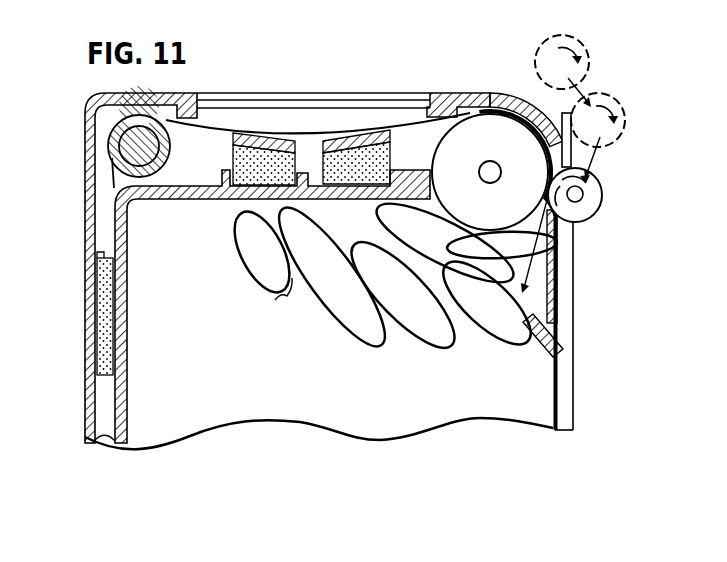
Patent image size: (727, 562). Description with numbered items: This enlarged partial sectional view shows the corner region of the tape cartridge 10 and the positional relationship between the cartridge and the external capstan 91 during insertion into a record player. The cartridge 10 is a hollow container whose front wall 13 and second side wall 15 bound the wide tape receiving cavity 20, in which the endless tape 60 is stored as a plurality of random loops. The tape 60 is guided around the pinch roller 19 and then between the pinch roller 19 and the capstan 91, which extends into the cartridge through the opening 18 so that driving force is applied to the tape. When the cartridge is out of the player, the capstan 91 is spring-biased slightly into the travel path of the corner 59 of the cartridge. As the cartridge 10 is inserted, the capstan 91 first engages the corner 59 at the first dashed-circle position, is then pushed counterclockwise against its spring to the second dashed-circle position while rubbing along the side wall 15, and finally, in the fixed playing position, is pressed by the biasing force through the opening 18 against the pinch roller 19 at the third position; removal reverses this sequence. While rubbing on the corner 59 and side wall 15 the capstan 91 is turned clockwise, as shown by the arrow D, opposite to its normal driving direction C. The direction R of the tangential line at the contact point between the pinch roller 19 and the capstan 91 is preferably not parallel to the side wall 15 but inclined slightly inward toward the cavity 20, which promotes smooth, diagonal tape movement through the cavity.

The tape cartridge 10 is at (60, 360).
The front wall 13 is at (447, 95).
The second side wall 15 is at (578, 336).
The opening 18 is at (600, 152).
The pinch roller 19 is at (493, 142).
The tape receiving cavity 20 is at (243, 404).
The corner 59 is at (577, 96).
The endless tape 60 is at (380, 318).
The capstan 91 is at (593, 230).
The direction of tangential line R is at (482, 301).